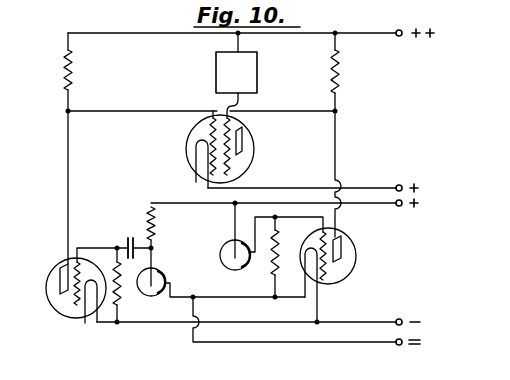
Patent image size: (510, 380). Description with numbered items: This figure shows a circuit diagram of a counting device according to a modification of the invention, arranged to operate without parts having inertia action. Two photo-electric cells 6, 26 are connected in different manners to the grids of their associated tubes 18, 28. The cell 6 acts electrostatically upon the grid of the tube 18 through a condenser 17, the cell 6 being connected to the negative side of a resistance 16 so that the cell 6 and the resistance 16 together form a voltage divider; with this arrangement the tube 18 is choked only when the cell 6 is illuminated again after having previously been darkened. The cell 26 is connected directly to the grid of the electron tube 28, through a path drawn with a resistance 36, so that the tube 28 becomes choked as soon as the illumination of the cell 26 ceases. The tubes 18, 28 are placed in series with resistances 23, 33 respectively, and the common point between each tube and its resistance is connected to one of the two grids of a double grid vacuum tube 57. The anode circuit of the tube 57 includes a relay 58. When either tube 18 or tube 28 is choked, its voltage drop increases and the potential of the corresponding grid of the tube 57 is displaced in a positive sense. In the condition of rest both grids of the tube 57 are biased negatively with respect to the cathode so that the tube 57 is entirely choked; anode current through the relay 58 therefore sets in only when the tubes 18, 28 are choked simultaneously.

The resistance 23 is at (53, 70).
The resistance 33 is at (340, 70).
The relay 58 is at (236, 72).
The double grid vacuum tube 57 is at (256, 141).
The resistance 16 is at (165, 223).
The condenser 17 is at (127, 237).
The tube 18 is at (46, 286).
The photo-electric cell 6 is at (163, 277).
The photo-electric cell 26 is at (223, 248).
The resistor 36 is at (271, 273).
The electron tube 28 is at (357, 253).